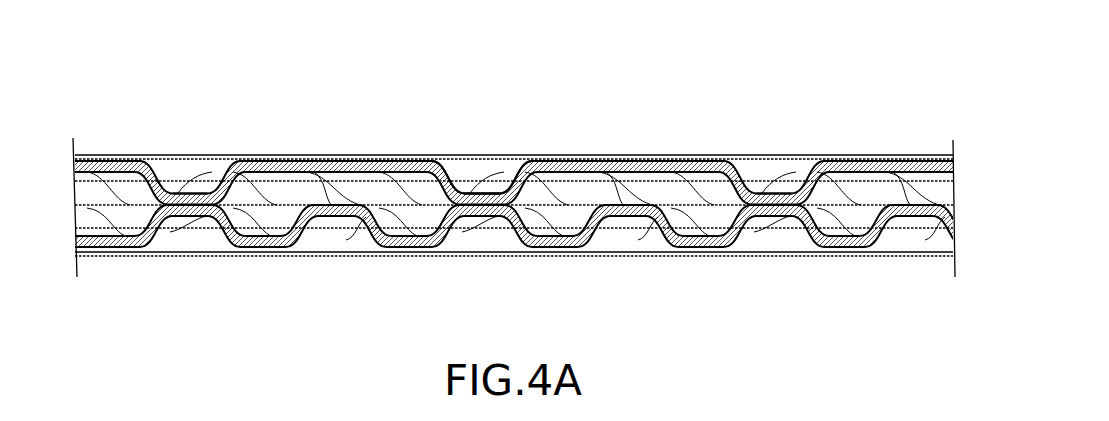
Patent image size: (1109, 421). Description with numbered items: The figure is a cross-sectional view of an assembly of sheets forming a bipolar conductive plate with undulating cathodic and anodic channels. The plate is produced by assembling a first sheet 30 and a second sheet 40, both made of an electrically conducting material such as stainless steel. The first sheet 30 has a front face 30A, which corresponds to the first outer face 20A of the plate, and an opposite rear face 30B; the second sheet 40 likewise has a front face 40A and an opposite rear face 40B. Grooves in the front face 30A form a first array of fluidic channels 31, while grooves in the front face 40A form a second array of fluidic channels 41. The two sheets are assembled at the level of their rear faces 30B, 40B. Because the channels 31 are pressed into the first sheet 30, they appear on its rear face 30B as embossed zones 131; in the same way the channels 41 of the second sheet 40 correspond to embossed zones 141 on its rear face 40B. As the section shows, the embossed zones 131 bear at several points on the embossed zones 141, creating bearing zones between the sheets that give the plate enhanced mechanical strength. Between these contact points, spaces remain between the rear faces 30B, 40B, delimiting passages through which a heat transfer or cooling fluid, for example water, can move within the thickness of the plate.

The first outer face 20A is at (103, 157).
The first sheet 30 is at (520, 206).
The front face of the first sheet 30A is at (667, 154).
The rear face of the first sheet 30B is at (566, 180).
The fluidic channels 31 is at (467, 160).
The embossed zones 131 is at (177, 193).
The second sheet 40 is at (530, 208).
The front face of the second sheet 40A is at (272, 230).
The rear face of the second sheet 40B is at (273, 260).
The fluidic channels 41 is at (198, 250).
The embossed zones 141 is at (170, 223).